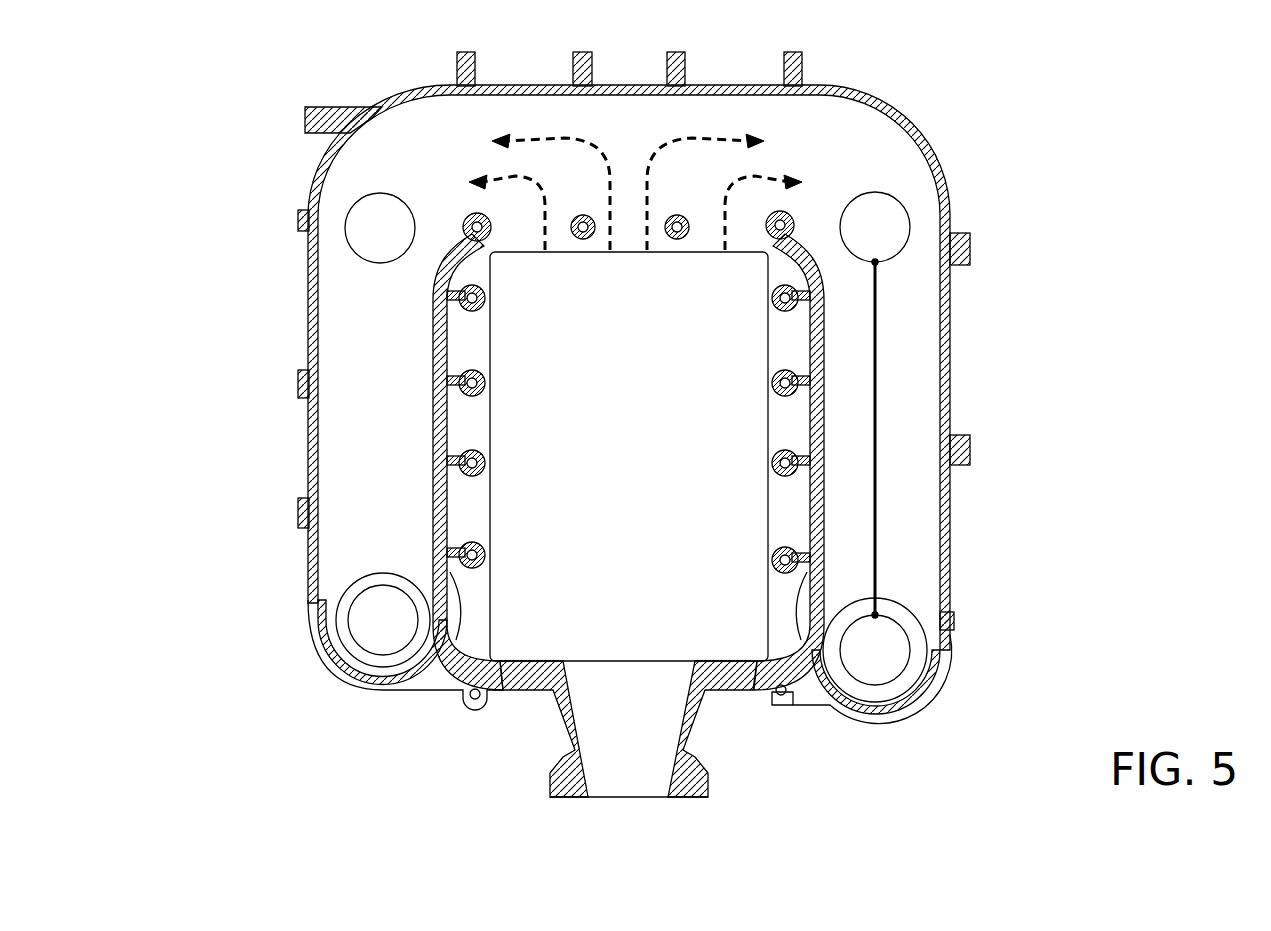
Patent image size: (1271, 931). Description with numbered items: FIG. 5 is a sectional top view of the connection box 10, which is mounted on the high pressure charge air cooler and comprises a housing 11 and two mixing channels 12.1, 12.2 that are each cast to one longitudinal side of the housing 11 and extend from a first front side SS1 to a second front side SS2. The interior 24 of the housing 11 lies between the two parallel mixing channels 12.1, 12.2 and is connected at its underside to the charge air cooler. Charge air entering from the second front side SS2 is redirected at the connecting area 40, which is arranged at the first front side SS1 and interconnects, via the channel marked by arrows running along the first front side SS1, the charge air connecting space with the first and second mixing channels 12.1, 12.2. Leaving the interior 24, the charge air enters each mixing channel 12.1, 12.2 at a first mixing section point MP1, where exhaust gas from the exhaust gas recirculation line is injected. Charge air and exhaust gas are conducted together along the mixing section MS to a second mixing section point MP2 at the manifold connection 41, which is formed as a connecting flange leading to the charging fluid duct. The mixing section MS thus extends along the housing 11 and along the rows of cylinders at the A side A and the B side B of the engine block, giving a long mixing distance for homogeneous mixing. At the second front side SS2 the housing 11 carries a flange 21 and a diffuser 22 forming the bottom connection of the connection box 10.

The connection box 10 is at (624, 370).
The housing 11 is at (528, 86).
The first mixing channel 12.1 is at (920, 547).
The second mixing channel 12.2 is at (335, 448).
The flange 21 is at (574, 798).
The diffuser 22 is at (562, 729).
The interior 24 is at (629, 456).
The connecting area 40 is at (372, 128).
The manifold connection 41 is at (910, 698).
The first mixing section point MP1 is at (627, 227).
The second mixing section point MP2 is at (623, 629).
The mixing section MS is at (877, 330).
The first front side SS1 is at (635, 18).
The second front side SS2 is at (633, 839).
The A side A is at (1037, 403).
The B side B is at (219, 405).